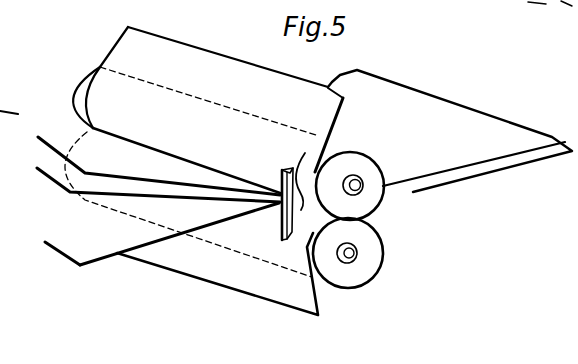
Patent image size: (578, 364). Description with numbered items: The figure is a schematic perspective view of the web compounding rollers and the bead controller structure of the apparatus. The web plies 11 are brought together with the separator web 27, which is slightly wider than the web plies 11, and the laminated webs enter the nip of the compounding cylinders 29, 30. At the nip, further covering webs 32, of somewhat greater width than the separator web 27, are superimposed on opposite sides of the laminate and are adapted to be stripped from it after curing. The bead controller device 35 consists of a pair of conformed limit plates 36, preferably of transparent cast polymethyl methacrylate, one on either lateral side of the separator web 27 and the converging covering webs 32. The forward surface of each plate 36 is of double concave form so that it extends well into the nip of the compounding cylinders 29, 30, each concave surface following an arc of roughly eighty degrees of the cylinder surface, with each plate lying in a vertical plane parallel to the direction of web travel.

The web plies 11 is at (83, 157).
The separator web 27 is at (76, 188).
The compounding cylinder 29 is at (365, 207).
The compounding cylinder 30 is at (369, 267).
The covering webs 32 is at (332, 102).
The bead controller device 35 is at (282, 223).
The limit plate 36 is at (304, 157).